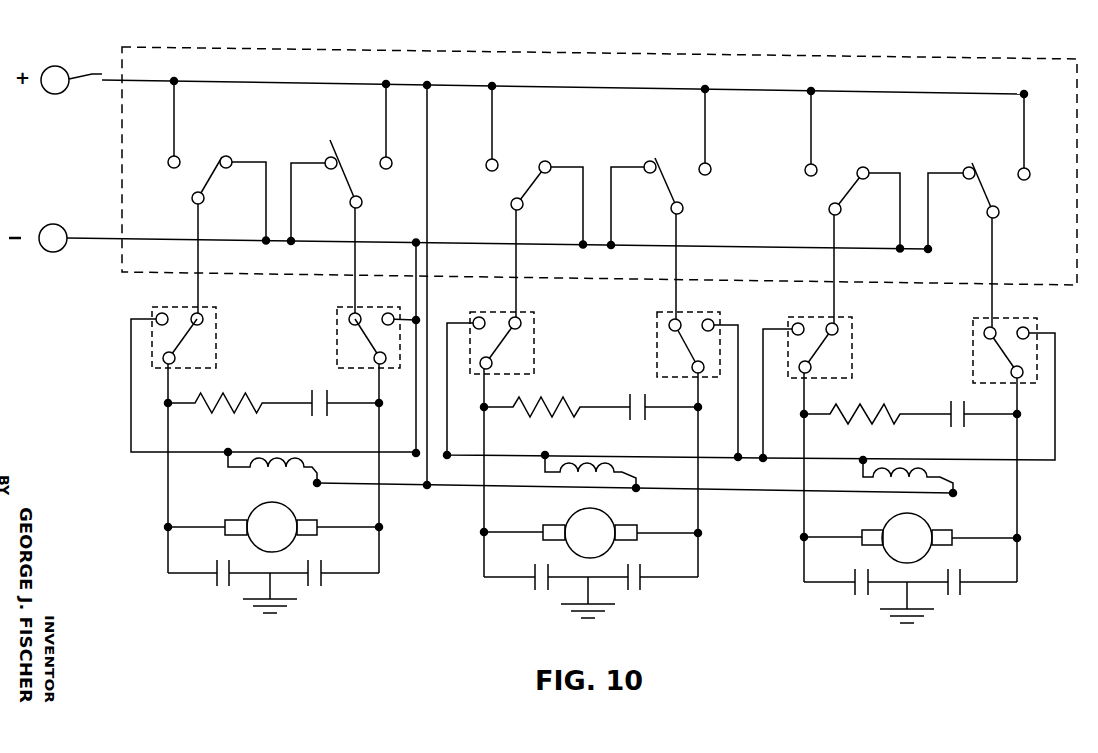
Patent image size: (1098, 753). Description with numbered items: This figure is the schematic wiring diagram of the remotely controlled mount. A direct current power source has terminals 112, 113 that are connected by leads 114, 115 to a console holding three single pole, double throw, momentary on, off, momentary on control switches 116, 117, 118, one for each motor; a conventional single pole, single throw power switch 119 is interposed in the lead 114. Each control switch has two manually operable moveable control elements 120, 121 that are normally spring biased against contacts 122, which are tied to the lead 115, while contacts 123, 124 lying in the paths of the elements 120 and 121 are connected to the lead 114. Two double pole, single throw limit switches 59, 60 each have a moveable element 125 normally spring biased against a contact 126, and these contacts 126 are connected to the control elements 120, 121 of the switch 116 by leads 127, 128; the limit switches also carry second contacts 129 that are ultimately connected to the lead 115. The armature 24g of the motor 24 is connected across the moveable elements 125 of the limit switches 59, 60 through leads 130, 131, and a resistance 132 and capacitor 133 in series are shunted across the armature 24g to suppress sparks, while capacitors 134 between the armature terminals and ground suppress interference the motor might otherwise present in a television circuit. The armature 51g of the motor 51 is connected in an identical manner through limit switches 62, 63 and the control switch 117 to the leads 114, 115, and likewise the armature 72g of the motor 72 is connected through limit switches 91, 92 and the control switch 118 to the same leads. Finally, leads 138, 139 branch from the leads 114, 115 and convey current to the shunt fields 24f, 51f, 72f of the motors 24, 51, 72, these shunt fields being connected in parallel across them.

The terminal 112 is at (46, 68).
The terminal 113 is at (48, 226).
The lead 114 is at (143, 80).
The lead 115 is at (118, 238).
The control switch 116 is at (276, 161).
The control switch 117 is at (600, 145).
The control switch 118 is at (924, 158).
The power switch 119 is at (92, 74).
The moveable control element 120 is at (214, 170).
The moveable control element 121 is at (345, 177).
The contact 122 is at (230, 156).
The contact 123 is at (178, 156).
The contact 124 is at (383, 156).
The moveable element 125 is at (176, 351).
The contact 126 is at (203, 314).
The lead 127 is at (198, 259).
The lead 128 is at (356, 262).
The second contact 129 is at (157, 313).
The lead 130 is at (168, 465).
The lead 131 is at (381, 518).
The resistance 132 is at (222, 409).
The capacitor 133 is at (329, 418).
The capacitor 134 is at (212, 581).
The lead 138 is at (428, 221).
The lead 139 is at (416, 421).
The limit switch 59 is at (266, 370).
The limit switch 60 is at (330, 337).
The limit switch 62 is at (541, 340).
The limit switch 63 is at (649, 340).
The limit switch 91 is at (859, 345).
The limit switch 92 is at (965, 345).
The motor 24 is at (237, 532).
The shunt field 24f is at (317, 473).
The armature 24g is at (250, 516).
The motor 51 is at (573, 493).
The shunt field 51f is at (637, 478).
The armature 51g is at (591, 526).
The motor 72 is at (888, 498).
The shunt field 72f is at (953, 482).
The armature 72g is at (910, 530).